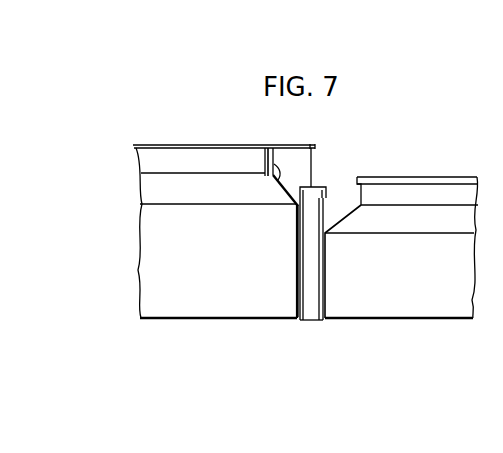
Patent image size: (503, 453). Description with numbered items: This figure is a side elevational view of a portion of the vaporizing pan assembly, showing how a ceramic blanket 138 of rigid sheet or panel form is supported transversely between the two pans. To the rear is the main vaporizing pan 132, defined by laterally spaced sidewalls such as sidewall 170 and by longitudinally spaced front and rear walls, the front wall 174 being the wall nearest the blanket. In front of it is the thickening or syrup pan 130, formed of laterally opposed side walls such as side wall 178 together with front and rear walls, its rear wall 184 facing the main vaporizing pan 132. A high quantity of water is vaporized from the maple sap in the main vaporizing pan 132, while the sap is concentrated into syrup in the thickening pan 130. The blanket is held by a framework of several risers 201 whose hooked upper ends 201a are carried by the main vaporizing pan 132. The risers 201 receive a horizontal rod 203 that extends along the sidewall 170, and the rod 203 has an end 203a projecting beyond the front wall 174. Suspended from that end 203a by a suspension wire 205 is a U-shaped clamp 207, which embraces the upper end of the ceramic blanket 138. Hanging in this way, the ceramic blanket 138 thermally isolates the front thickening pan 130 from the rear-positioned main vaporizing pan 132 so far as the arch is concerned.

The thickening pan 130 is at (436, 300).
The main vaporizing pan 132 is at (221, 306).
The ceramic blanket 138 is at (312, 307).
The sidewall 170 is at (193, 279).
The front wall 174 is at (296, 268).
The side wall 178 is at (438, 279).
The rear wall 184 is at (327, 283).
The riser 201 is at (278, 179).
The hooked upper end 201a is at (273, 148).
The horizontal rod 203 is at (195, 145).
The rod end 203a is at (315, 146).
The suspension wire 205 is at (312, 161).
The U-shaped clamp 207 is at (323, 187).